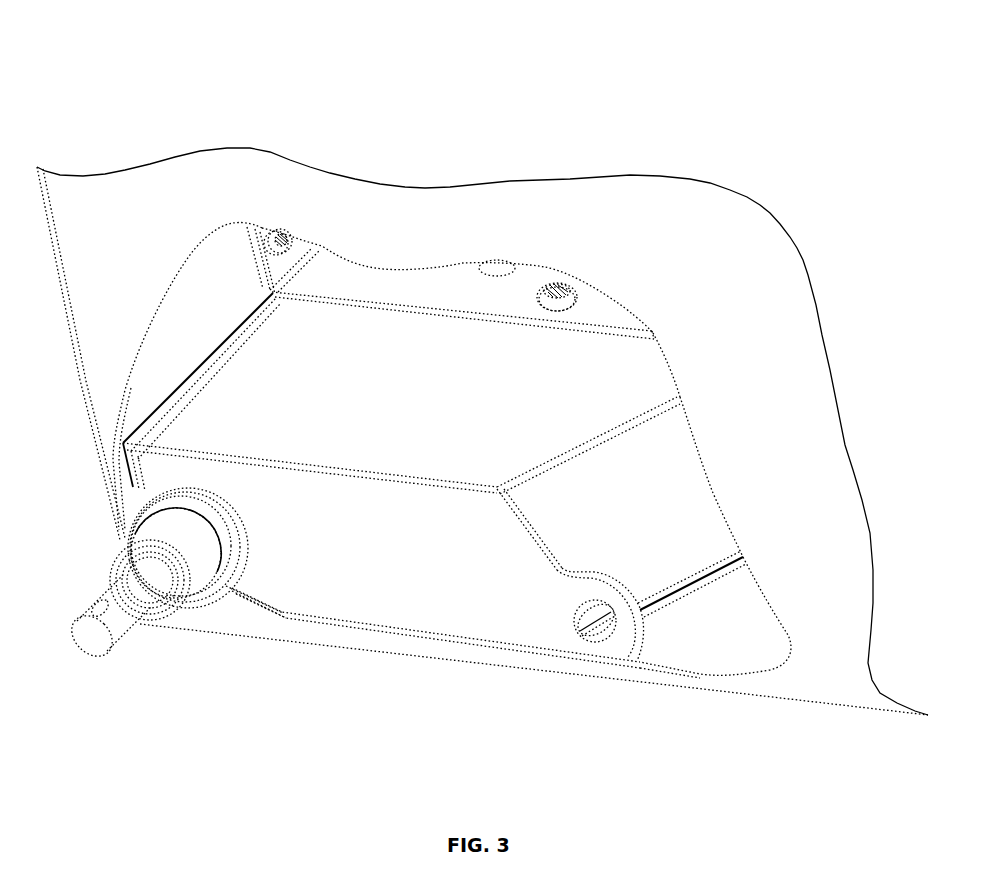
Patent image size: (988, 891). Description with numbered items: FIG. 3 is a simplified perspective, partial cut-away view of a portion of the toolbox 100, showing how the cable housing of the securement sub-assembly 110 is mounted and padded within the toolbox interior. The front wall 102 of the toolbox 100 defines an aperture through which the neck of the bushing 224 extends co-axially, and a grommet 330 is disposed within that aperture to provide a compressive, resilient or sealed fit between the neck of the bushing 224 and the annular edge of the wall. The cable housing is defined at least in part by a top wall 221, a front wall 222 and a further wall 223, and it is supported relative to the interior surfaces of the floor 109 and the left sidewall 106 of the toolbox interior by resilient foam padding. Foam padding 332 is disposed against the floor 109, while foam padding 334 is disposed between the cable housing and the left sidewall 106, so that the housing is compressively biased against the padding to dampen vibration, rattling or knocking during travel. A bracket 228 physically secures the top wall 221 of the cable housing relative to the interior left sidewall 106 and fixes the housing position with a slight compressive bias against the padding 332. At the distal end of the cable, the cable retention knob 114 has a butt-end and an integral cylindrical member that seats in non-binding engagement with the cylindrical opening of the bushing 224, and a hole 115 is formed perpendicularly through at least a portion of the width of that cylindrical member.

The toolbox 100 is at (660, 44).
The front wall 102 is at (689, 255).
The left sidewall 106 is at (216, 376).
The floor 109 is at (762, 642).
The securement sub-assembly 110 is at (637, 371).
The cable retention knob 114 is at (127, 634).
The hole 115 is at (89, 608).
The top wall 221 is at (433, 404).
The front wall 222 is at (410, 575).
The wall 223 is at (620, 483).
The bushing 224 is at (193, 601).
The bracket 228 is at (470, 300).
The grommet 330 is at (248, 531).
The foam padding 332 is at (663, 600).
The foam padding 334 is at (201, 368).